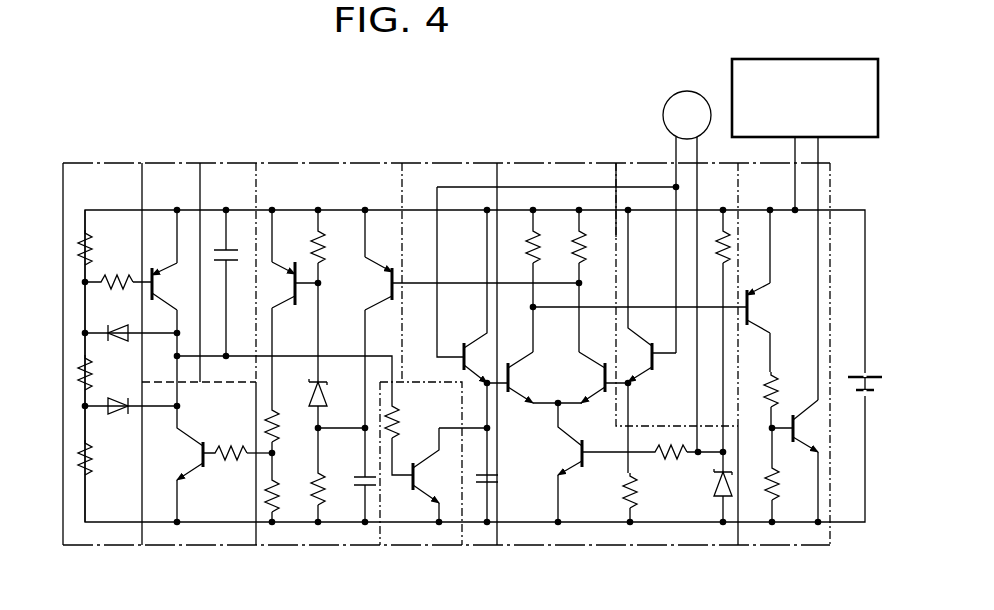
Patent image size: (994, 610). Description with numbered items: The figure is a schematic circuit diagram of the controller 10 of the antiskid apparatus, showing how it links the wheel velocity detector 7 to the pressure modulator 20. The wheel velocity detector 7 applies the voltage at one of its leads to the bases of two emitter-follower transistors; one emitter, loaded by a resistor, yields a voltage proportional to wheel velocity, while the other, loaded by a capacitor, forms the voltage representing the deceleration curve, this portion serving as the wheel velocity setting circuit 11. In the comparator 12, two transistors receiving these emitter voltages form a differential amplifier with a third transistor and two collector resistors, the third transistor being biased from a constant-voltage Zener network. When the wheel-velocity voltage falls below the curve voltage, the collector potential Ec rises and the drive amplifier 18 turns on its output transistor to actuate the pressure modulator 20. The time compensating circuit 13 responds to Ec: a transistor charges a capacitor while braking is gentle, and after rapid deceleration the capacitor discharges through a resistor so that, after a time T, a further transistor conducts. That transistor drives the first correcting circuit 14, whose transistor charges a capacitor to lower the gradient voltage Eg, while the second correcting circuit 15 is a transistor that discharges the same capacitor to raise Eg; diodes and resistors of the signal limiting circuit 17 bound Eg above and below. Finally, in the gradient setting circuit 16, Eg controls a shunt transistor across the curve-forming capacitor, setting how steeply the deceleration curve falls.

The wheel velocity detector 7 is at (681, 93).
The controller 10 is at (402, 116).
The wheel velocity setting circuit 11 is at (455, 163).
The comparator 12 is at (543, 163).
The time compensating circuit 13 is at (315, 163).
The first correcting circuit 14 is at (228, 547).
The second correcting circuit 15 is at (178, 163).
The gradient setting circuit 16 is at (232, 163).
The signal limiting circuit 17 is at (100, 163).
The drive amplifier 18 is at (832, 178).
The pressure modulator 20 is at (750, 58).